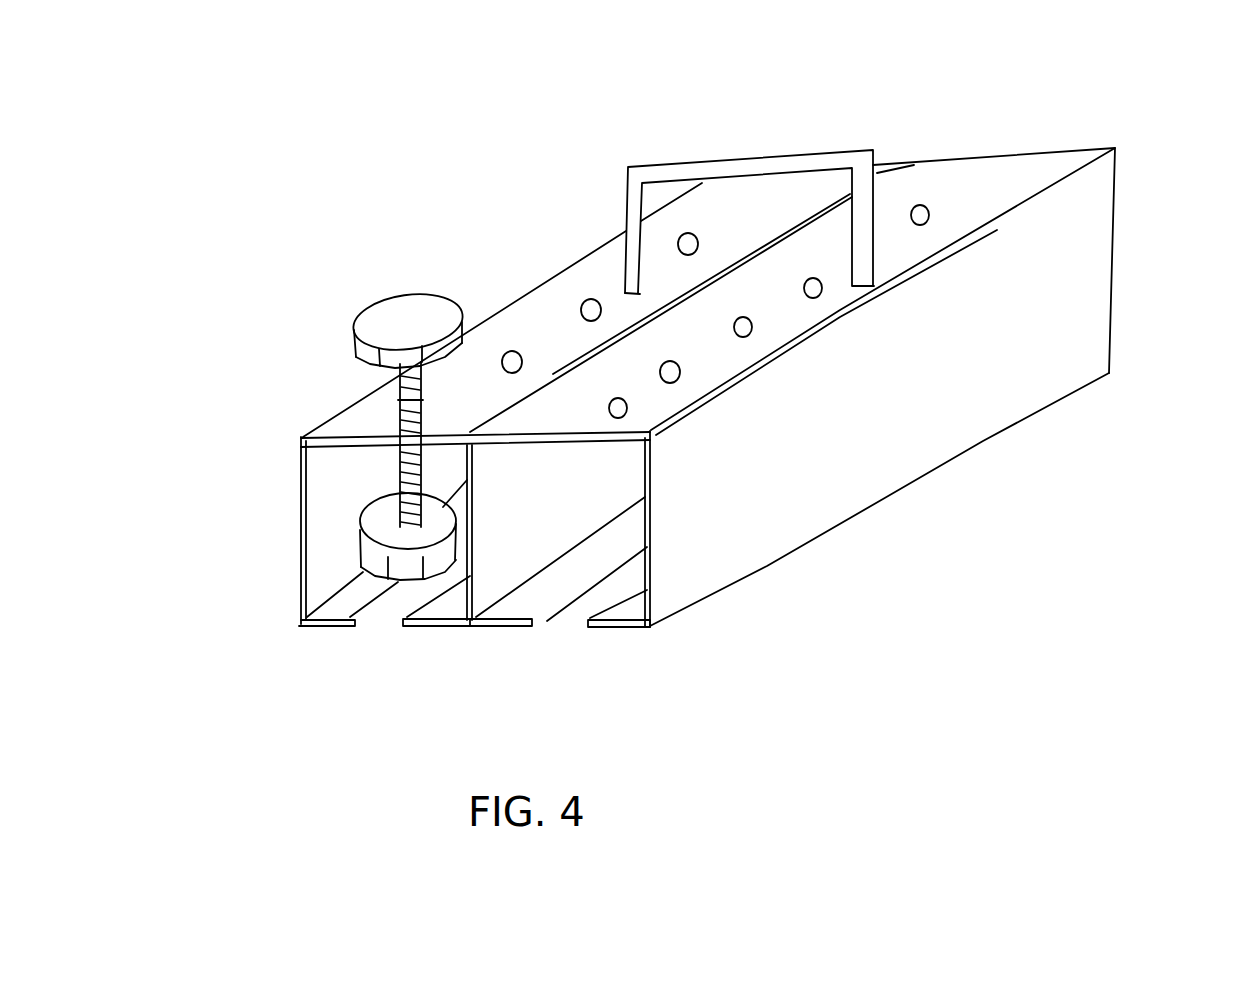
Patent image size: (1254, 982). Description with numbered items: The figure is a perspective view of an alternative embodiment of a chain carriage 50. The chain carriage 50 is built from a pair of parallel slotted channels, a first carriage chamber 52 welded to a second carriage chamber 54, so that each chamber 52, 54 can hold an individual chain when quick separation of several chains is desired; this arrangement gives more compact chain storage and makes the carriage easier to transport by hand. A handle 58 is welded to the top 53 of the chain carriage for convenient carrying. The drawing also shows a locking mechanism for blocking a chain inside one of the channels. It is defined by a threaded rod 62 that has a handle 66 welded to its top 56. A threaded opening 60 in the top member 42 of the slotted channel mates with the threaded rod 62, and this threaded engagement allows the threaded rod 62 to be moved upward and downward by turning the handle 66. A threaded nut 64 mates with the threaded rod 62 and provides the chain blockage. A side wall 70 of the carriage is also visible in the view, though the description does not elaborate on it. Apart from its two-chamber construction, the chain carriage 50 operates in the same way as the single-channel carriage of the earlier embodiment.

The top member 42 is at (411, 430).
The chain carriage 50 is at (788, 783).
The first carriage chamber 52 is at (579, 480).
The top 53 is at (723, 245).
The second carriage chamber 54 is at (366, 624).
The top 56 is at (266, 444).
The handle 58 is at (749, 159).
The threaded opening 60 is at (675, 284).
The threaded rod 62 is at (300, 450).
The threaded nut 64 is at (396, 671).
The handle 66 is at (394, 269).
The side wall 70 is at (945, 387).